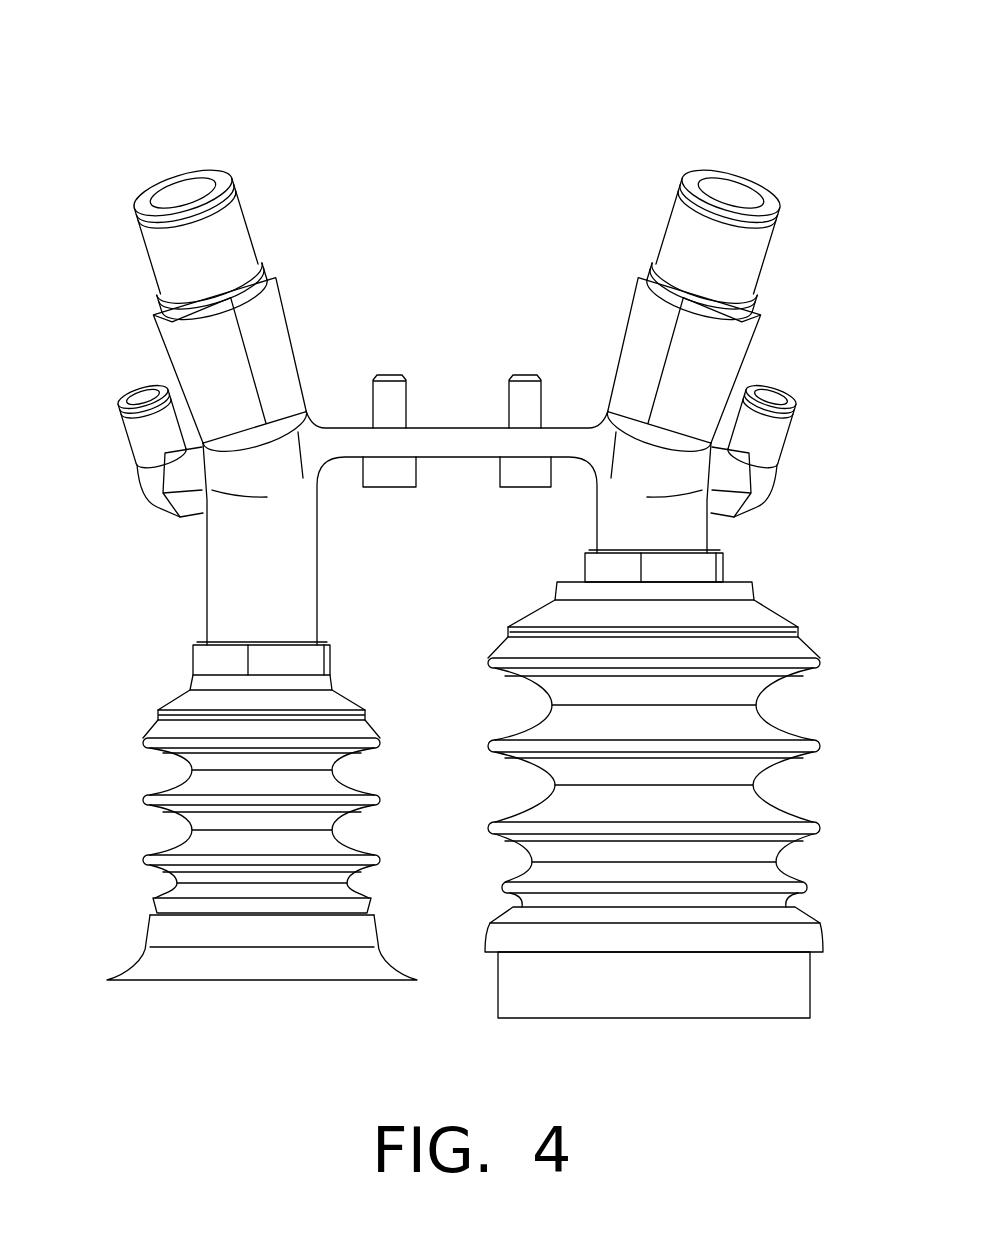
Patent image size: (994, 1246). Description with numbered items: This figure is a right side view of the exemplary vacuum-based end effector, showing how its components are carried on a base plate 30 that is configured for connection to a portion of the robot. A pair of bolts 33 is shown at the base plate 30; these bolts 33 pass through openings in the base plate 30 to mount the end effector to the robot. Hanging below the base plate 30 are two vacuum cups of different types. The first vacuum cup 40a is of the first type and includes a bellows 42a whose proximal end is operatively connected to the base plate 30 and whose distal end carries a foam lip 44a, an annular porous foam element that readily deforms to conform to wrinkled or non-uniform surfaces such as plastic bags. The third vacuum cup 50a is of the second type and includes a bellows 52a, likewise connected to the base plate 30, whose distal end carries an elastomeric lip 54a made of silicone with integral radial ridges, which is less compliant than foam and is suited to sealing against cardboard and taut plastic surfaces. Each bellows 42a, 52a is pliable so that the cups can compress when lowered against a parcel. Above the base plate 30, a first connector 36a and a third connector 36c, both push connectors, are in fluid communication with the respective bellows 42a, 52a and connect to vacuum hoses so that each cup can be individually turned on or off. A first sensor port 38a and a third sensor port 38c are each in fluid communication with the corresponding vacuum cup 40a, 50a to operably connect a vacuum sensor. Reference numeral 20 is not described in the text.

The arm of manifold body 20 is at (207, 588).
The base plate 30 is at (424, 442).
The bolts 33 is at (524, 374).
The first connector 36a is at (742, 177).
The third connector 36c is at (153, 185).
The first sensor port 38a is at (796, 392).
The third sensor port 38c is at (118, 392).
The first vacuum cup 40a is at (785, 613).
The bellows 42a is at (772, 745).
The foam lip 44a is at (810, 992).
The third vacuum cup 50a is at (163, 727).
The bellows 52a is at (193, 800).
The elastomeric lip 54a is at (127, 960).